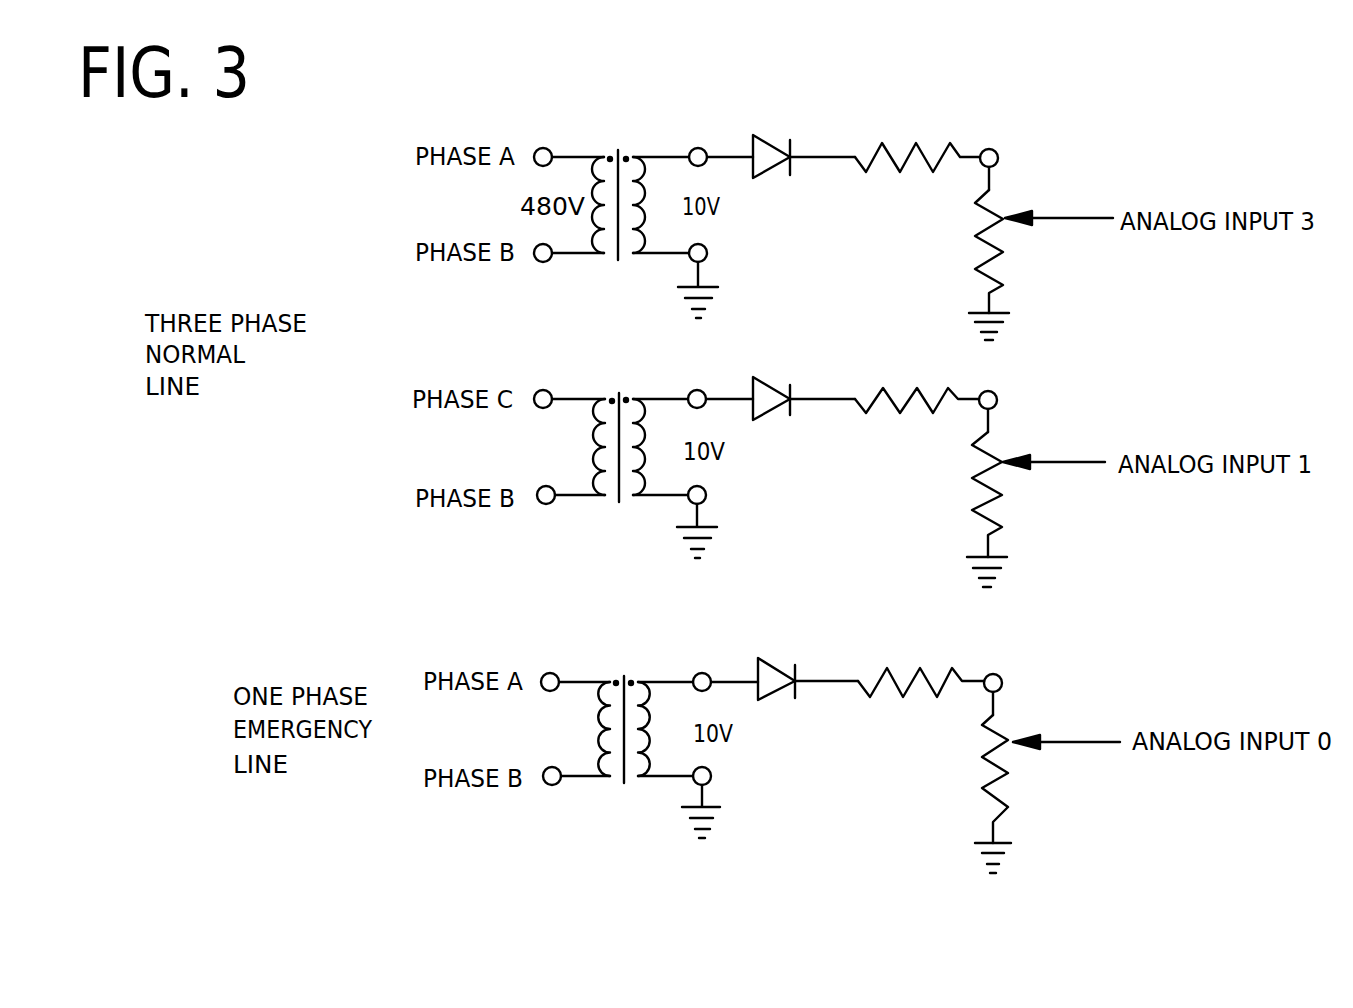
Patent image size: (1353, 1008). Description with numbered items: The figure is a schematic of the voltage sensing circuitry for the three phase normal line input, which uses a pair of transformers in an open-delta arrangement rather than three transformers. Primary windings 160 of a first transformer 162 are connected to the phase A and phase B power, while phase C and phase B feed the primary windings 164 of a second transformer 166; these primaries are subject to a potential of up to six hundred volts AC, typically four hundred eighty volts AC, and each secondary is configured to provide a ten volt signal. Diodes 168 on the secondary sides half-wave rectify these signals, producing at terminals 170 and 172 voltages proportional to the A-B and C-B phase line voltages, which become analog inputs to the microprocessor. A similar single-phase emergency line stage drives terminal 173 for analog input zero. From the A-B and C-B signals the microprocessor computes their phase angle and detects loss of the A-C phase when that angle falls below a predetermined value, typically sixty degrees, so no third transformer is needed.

The primary windings 160 is at (578, 157).
The first transformer 162 is at (630, 302).
The primary windings 164 is at (585, 397).
The second transformer 166 is at (630, 543).
The diodes 168 is at (773, 142).
The terminal 170 is at (989, 149).
The terminal 172 is at (988, 391).
The analog input 0 voltage divider node 173 is at (993, 674).